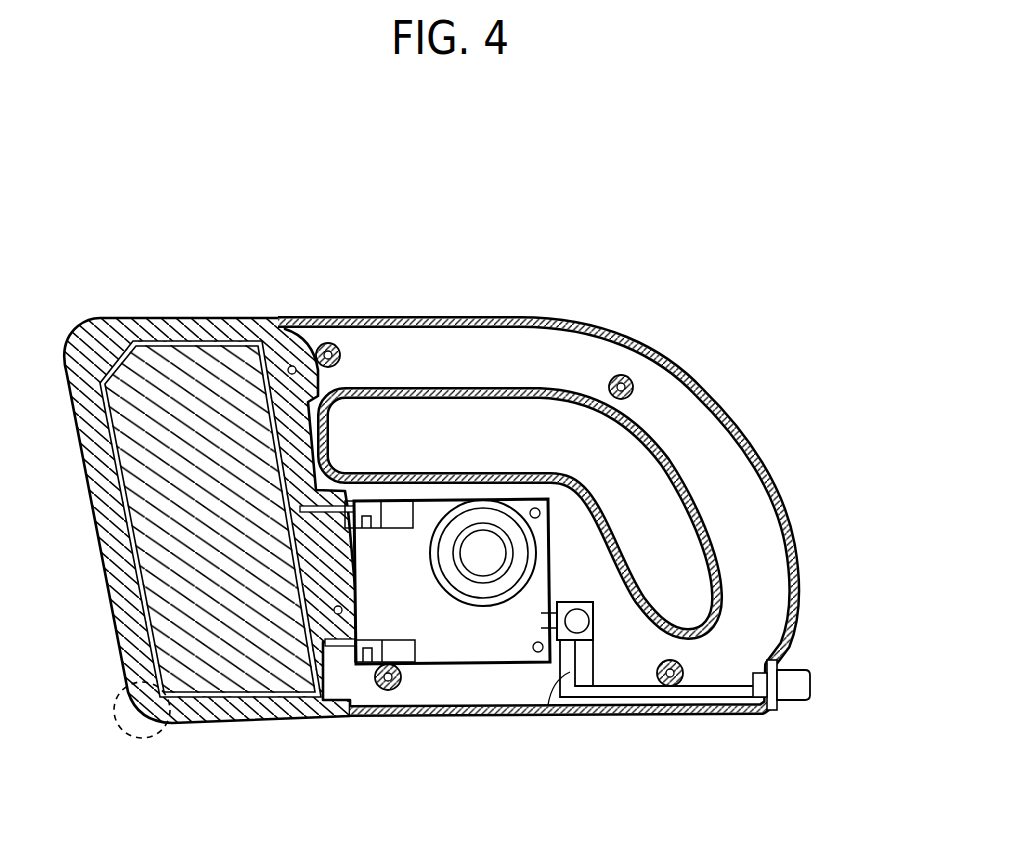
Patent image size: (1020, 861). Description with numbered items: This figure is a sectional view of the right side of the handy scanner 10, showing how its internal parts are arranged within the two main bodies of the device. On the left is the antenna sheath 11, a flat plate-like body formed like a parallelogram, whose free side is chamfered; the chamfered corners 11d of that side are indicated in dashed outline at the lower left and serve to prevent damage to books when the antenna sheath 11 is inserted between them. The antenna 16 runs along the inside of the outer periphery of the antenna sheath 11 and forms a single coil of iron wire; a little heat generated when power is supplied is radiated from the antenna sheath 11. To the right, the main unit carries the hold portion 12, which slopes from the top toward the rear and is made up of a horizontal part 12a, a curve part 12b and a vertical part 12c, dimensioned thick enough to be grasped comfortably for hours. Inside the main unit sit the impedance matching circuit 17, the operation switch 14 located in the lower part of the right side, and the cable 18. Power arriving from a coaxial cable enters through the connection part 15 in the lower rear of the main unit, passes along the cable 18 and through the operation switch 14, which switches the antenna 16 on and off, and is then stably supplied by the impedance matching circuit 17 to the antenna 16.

The handy scanner 10 is at (241, 262).
The antenna sheath 11 is at (97, 316).
The corners 11d is at (140, 738).
The hold portion 12 is at (600, 420).
The horizontal part 12a is at (328, 235).
The curve part 12b is at (760, 328).
The vertical part 12c is at (738, 360).
The operation switch 14 is at (602, 640).
The connection part 15 is at (793, 695).
The antenna 16 is at (259, 703).
The impedance matching circuit 17 is at (441, 645).
The cable 18 is at (560, 695).